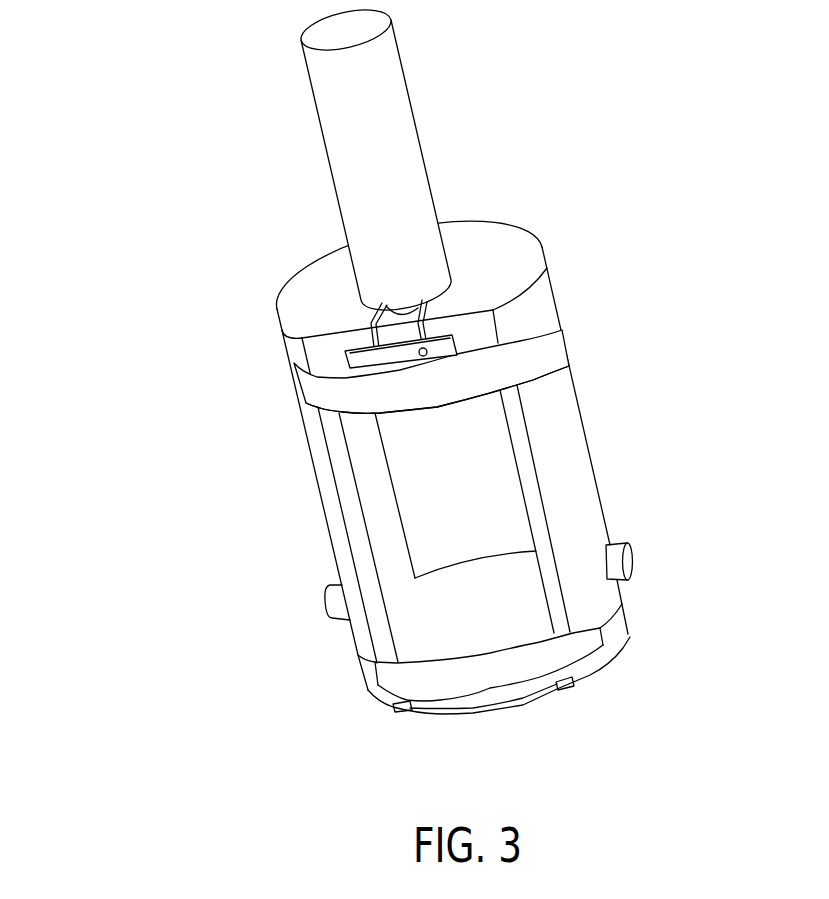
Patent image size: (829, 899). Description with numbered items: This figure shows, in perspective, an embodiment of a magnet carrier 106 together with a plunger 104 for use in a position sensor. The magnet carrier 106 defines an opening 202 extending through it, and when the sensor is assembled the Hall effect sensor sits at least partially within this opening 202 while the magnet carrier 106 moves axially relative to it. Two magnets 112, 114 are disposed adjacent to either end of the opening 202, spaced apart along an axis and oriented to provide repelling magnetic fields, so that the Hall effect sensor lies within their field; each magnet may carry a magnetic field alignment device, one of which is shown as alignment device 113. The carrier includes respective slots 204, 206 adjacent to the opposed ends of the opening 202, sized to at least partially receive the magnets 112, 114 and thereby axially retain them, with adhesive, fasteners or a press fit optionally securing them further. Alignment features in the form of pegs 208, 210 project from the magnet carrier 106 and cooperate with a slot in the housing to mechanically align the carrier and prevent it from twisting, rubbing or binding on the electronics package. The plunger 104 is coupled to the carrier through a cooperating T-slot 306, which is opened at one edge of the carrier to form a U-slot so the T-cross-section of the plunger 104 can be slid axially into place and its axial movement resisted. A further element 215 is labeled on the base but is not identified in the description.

The plunger 104 is at (410, 100).
The magnet carrier 106 is at (542, 243).
The magnet 112 is at (513, 357).
The magnetic field alignment device 113 is at (505, 382).
The opening 202 is at (527, 500).
The slot 204 is at (307, 401).
The slot 206 is at (602, 634).
The peg 208 is at (632, 562).
The peg 210 is at (327, 602).
The magnet 114 is at (520, 677).
The base interior surface 215 is at (454, 647).
The cooperating T-slot 306 is at (371, 322).